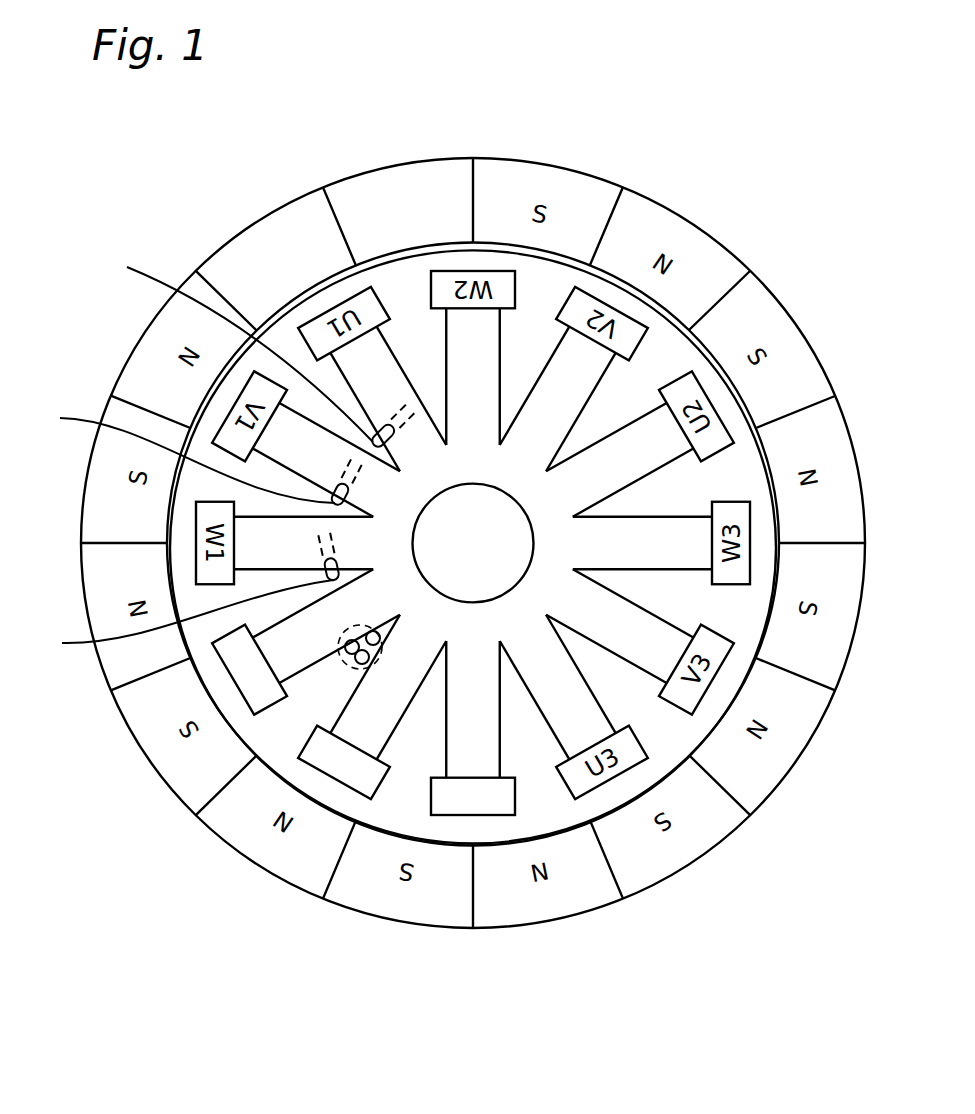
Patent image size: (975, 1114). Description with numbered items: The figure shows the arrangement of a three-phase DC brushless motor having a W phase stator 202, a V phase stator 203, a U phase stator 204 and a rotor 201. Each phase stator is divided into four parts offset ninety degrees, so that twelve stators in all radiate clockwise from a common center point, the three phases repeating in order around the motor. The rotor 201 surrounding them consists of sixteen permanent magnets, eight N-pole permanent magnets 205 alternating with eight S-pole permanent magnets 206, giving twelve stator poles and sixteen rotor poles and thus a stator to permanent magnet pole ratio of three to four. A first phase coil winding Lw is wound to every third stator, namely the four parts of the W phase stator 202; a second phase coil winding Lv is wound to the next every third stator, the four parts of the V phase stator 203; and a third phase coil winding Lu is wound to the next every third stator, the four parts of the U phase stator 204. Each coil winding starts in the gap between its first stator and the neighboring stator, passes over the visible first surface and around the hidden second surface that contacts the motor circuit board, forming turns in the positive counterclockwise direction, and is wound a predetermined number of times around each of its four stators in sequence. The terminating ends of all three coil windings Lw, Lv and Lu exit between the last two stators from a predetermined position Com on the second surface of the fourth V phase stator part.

The rotor 201 is at (862, 593).
The W phase stator 202 is at (465, 815).
The V phase stator 203 is at (353, 787).
The U phase stator 204 is at (242, 668).
The N-pole permanent magnet 205 is at (647, 212).
The S-pole permanent magnet 206 is at (772, 312).
The U phase coil winding Lu is at (254, 345).
The V phase coil winding Lv is at (195, 452).
The W phase coil winding Lw is at (183, 590).
The predetermined position Com is at (343, 663).